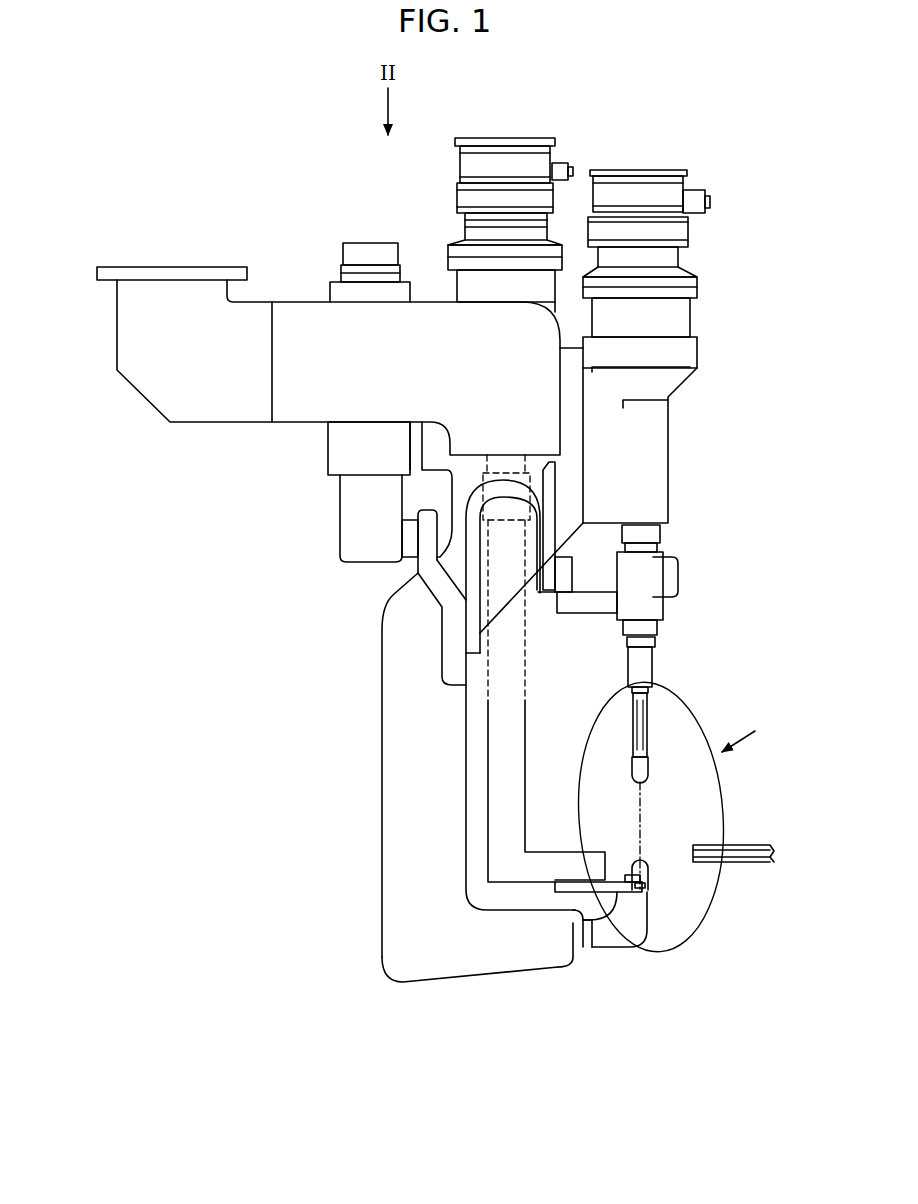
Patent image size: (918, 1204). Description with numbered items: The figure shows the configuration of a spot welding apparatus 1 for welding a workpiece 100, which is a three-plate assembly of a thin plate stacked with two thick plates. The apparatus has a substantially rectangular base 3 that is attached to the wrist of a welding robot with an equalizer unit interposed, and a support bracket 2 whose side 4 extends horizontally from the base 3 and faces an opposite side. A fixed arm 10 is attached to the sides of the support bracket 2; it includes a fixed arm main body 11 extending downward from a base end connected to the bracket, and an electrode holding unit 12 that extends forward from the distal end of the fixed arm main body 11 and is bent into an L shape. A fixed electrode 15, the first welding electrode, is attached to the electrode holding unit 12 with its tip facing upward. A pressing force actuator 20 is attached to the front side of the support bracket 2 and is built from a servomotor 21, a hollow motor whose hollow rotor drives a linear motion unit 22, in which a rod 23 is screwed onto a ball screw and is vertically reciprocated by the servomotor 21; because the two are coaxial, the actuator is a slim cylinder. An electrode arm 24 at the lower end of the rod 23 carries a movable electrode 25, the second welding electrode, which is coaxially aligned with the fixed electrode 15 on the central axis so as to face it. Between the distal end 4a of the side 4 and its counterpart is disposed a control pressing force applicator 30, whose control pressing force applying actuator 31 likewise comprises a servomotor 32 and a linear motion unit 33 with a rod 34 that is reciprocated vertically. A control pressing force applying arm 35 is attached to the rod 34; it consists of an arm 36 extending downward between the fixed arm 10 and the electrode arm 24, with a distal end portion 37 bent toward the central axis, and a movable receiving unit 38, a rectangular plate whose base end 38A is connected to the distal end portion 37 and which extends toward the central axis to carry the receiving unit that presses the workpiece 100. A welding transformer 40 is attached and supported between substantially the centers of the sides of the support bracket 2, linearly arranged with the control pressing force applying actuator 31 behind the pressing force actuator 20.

The spot welding apparatus 1 is at (235, 635).
The support bracket 2 is at (262, 300).
The base 3 is at (237, 265).
The side 4 is at (290, 405).
The distal end 4a is at (550, 440).
The fixed arm 10 is at (380, 715).
The fixed arm main body 11 is at (388, 740).
The electrode holding unit 12 is at (546, 968).
The fixed electrode 15 is at (647, 870).
The pressing force actuator 20 is at (775, 208).
The servomotor 21 is at (692, 231).
The linear motion unit 22 is at (690, 325).
The rod 23 is at (655, 535).
The electrode arm 24 is at (648, 663).
The movable electrode 25 is at (648, 765).
The control pressing force applicator 30 is at (430, 282).
The control pressing force applying actuator 31 is at (391, 153).
The servomotor 32 is at (467, 168).
The linear motion unit 33 is at (460, 285).
The rod 34 is at (555, 465).
The control pressing force applying arm 35 is at (488, 765).
The arm 36 is at (500, 793).
The distal end portion 37 is at (544, 863).
The movable receiving unit 38 is at (610, 887).
The base end 38A is at (576, 887).
The welding transformer 40 is at (338, 278).
The workpiece 100 is at (770, 845).